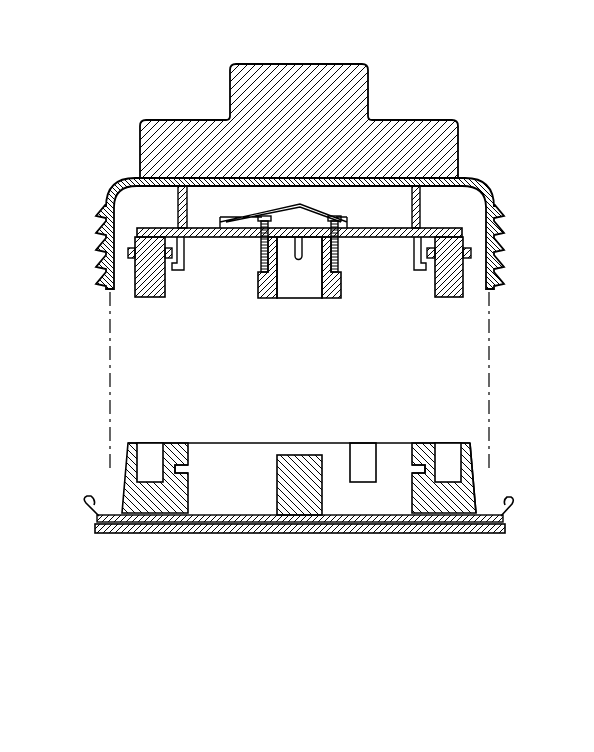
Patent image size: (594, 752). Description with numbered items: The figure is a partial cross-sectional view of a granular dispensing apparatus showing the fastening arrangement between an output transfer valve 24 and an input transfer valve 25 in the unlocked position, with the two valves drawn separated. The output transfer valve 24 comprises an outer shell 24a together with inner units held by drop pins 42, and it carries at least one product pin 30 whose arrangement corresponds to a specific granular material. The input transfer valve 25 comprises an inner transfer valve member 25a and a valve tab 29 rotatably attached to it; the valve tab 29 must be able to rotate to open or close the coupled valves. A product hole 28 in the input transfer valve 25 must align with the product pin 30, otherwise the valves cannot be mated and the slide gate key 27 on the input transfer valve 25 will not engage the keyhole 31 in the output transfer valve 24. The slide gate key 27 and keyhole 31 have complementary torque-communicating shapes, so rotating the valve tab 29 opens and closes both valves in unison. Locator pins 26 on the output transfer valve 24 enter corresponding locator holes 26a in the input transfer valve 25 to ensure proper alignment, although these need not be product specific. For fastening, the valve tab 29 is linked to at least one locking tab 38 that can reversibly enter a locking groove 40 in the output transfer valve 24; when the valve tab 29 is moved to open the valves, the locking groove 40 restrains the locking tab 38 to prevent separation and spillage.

The output transfer valve 24 is at (395, 52).
The keyhole 31 is at (433, 119).
The outer shell 24a is at (495, 188).
The locator pin 26 is at (150, 298).
The locking tab 38 is at (179, 289).
The drop pins 42 is at (260, 275).
The product pin 30 is at (369, 298).
The locator hole 26a is at (148, 452).
The locking groove 40 is at (184, 468).
The product hole 28 is at (362, 455).
The inner transfer valve member 25a is at (473, 451).
The valve tab 29 is at (84, 505).
The slide gate key 27 is at (266, 490).
The input transfer valve 25 is at (286, 497).